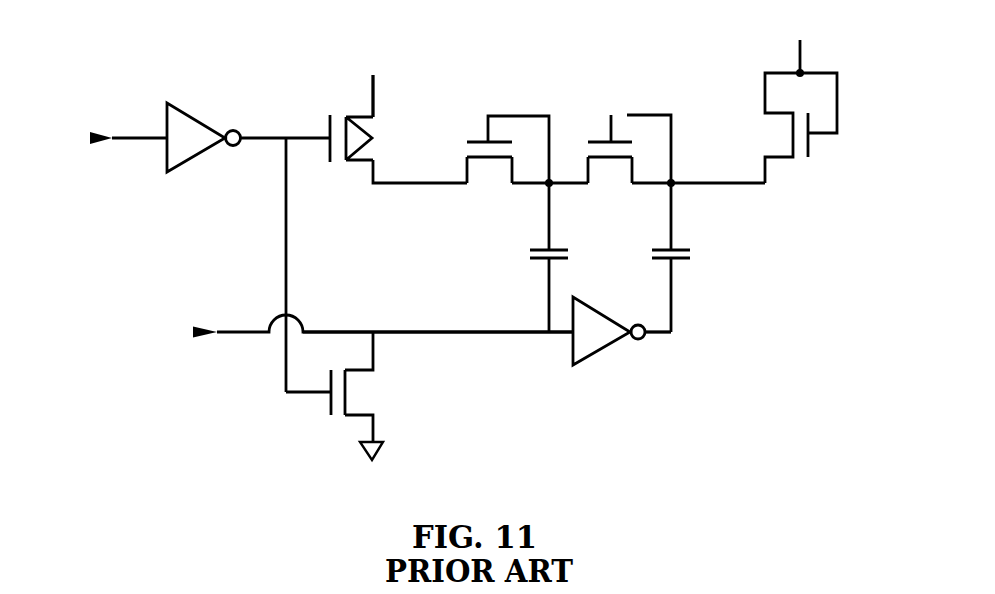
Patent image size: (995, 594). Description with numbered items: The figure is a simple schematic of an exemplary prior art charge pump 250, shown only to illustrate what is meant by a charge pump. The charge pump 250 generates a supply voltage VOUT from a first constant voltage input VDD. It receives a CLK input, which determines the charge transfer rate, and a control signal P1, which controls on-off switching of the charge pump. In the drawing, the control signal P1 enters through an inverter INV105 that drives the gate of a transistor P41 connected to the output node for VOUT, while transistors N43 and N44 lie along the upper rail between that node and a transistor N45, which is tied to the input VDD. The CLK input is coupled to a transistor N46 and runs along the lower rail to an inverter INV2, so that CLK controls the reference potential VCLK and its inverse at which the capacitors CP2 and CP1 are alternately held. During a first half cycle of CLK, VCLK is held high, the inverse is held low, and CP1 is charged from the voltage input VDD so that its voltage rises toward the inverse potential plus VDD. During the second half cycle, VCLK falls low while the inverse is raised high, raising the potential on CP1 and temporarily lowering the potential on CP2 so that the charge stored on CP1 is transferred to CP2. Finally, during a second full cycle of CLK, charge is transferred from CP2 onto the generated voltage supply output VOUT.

The charge pump 250 is at (566, 44).
The control signal P1 is at (111, 139).
The inverter INV105 is at (244, 120).
The PMOS transistor P41 is at (398, 129).
The NMOS transistor N43 is at (525, 168).
The NMOS transistor N44 is at (675, 168).
The NMOS transistor N45 is at (775, 128).
The NMOS transistor N46 is at (360, 396).
The capacitor CP1 is at (698, 257).
The capacitor CP2 is at (577, 257).
The CLK input CLK is at (355, 331).
The supply voltage VOUT is at (371, 71).
The first constant voltage input VDD is at (802, 38).
The reference potential VCLK is at (436, 334).
The clock inverter INV2 is at (622, 331).